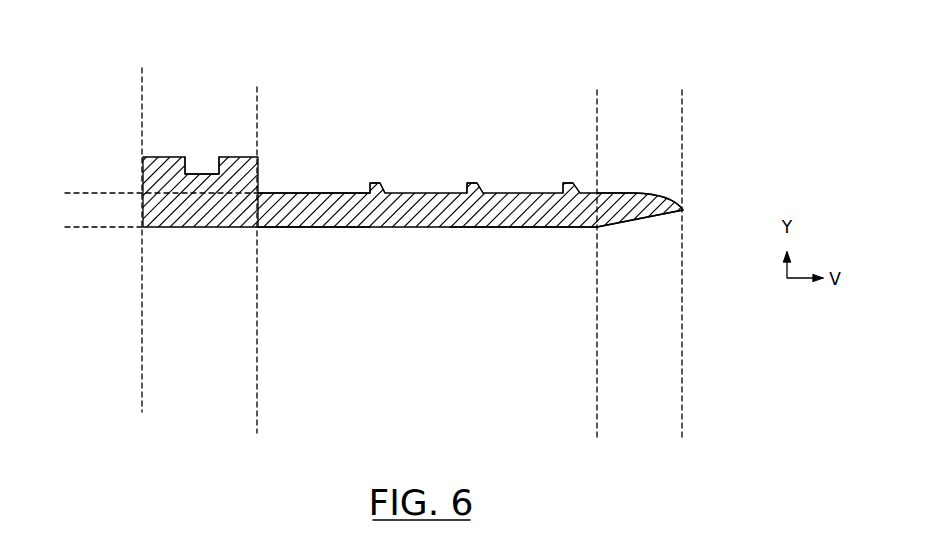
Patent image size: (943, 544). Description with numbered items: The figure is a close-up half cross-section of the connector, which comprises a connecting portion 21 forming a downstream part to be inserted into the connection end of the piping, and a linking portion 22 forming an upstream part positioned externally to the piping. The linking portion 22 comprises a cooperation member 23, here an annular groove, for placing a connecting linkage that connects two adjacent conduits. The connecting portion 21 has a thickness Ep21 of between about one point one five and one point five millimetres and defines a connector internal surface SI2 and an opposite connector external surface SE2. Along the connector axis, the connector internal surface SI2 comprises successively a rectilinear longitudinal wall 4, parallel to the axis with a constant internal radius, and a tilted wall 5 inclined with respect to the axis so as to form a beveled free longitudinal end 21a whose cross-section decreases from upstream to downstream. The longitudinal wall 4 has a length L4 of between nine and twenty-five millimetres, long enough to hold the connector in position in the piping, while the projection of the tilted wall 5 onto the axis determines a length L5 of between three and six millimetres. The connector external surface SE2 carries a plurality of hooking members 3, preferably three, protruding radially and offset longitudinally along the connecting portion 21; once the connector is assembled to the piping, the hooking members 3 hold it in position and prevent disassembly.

The linking portion 22 is at (148, 75).
The connecting portion 21 is at (672, 75).
The cooperation member 23 is at (205, 160).
The connector external surface SE2 is at (313, 192).
The hooking members 3 is at (569, 176).
The free longitudinal end 21a is at (642, 180).
The connector internal surface SI2 is at (312, 229).
The rectilinear longitudinal wall 4 is at (502, 228).
The tilted wall 5 is at (620, 222).
The thickness of the connecting portion Ep21 is at (100, 193).
The length of the longitudinal wall L4 is at (259, 413).
The length of the tilted wall projection L5 is at (680, 413).